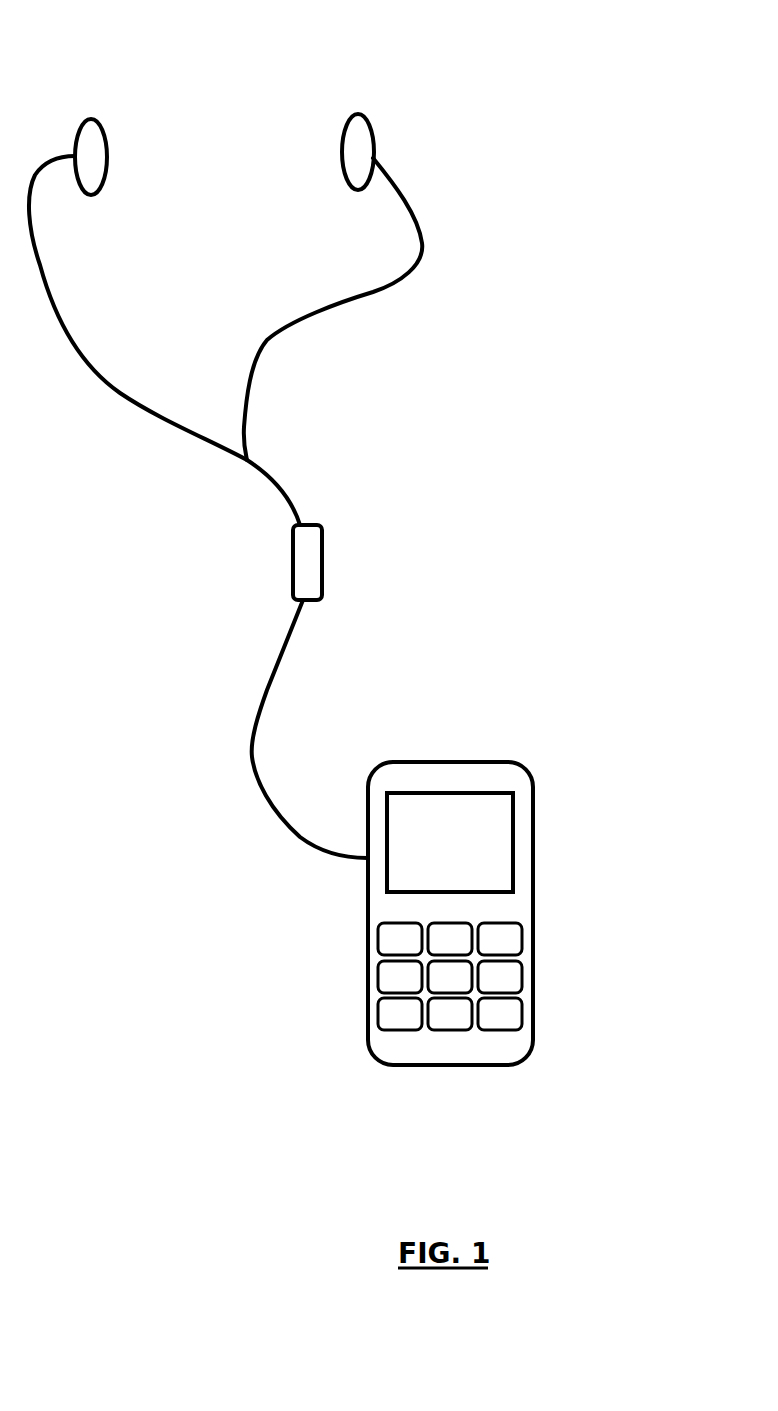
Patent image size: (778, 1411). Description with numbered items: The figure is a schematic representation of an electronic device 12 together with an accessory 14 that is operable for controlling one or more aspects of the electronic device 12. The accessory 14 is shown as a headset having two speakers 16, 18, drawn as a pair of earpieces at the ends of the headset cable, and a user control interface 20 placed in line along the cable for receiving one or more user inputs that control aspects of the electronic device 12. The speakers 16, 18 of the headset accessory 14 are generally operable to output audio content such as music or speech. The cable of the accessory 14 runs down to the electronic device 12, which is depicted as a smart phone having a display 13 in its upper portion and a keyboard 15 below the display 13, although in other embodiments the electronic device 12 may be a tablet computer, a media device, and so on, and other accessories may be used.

The electronic device 12 is at (502, 758).
The display 13 is at (513, 838).
The accessory 14 is at (265, 697).
The keyboard 15 is at (513, 945).
The speaker 16 is at (78, 130).
The speaker 18 is at (365, 113).
The user control interface 20 is at (322, 542).